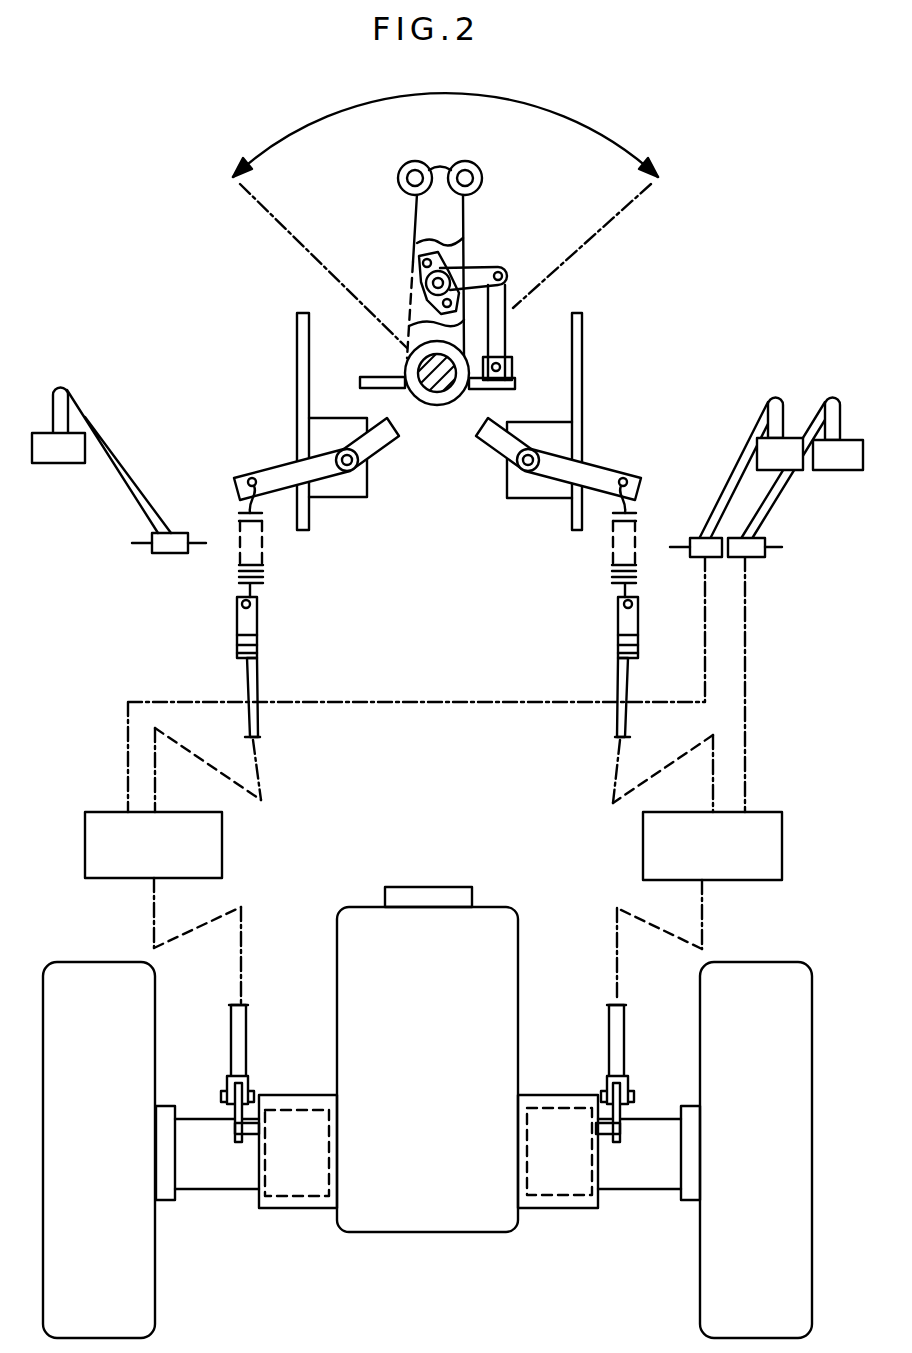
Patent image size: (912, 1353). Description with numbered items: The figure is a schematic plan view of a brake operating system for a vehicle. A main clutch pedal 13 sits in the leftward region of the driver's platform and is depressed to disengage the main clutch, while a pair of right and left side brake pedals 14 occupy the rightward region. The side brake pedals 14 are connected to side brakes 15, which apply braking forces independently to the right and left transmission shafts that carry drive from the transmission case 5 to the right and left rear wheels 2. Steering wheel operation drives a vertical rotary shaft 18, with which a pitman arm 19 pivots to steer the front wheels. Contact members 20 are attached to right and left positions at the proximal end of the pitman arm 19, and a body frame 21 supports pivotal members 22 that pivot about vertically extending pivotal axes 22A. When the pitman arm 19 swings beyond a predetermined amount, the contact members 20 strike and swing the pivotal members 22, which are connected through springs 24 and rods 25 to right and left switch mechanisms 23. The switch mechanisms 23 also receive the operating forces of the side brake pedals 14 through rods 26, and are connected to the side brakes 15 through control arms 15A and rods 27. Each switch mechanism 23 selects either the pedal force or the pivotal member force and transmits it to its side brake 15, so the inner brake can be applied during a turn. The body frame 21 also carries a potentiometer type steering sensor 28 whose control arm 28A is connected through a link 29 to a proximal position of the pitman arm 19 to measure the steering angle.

The rear wheels 2 is at (50, 967).
The transmission case 5 is at (365, 922).
The main clutch pedal 13 is at (55, 466).
The side brake pedals 14 is at (838, 468).
The side brakes 15 is at (300, 1200).
The control arms 15A is at (235, 1150).
The vertical rotary shaft 18 is at (437, 374).
The pitman arm 19 is at (432, 214).
The contact members 20 is at (373, 379).
The body frame 21 is at (298, 383).
The pivotal members 22 is at (385, 442).
The pivotal axes 22A is at (347, 471).
The switch mechanisms 23 is at (96, 812).
The springs 24 is at (240, 570).
The rods 25 is at (245, 680).
The rods 26 is at (392, 700).
The rods 27 is at (232, 1038).
The potentiometer type steering sensor 28 is at (418, 285).
The control arm 28A is at (483, 270).
The link 29 is at (500, 335).